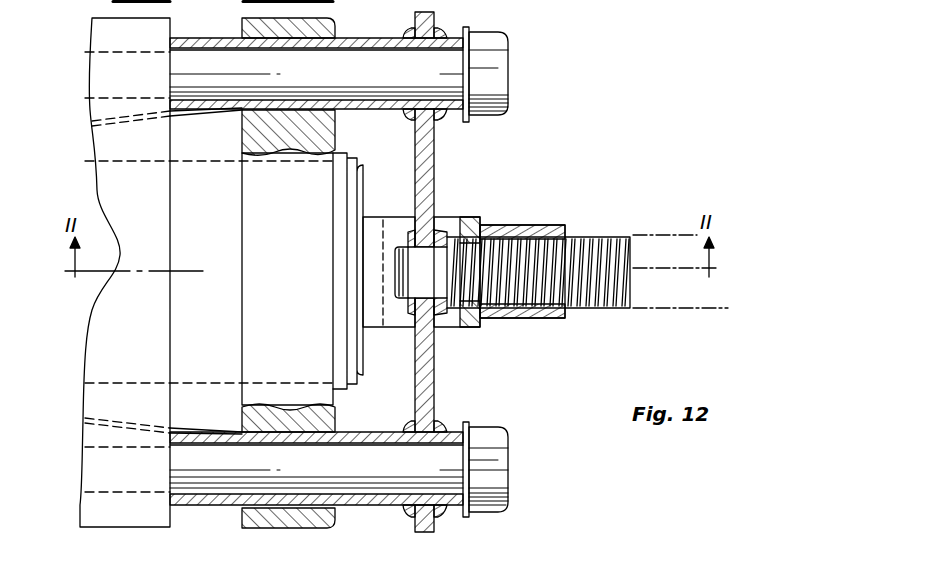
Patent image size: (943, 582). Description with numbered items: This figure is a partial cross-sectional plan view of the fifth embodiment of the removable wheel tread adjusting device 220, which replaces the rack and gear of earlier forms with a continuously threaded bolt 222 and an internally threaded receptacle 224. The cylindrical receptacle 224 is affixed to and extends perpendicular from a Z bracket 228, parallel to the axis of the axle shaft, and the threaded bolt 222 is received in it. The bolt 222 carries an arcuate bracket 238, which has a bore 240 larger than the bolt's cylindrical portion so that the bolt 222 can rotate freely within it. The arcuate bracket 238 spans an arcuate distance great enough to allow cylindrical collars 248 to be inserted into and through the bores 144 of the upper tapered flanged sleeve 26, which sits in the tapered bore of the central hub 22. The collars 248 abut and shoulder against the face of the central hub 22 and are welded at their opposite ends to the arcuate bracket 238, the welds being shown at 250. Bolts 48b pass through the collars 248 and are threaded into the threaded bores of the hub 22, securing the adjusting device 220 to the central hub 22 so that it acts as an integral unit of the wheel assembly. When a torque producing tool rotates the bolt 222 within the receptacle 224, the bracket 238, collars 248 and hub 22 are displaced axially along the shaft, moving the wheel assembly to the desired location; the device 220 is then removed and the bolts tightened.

The central hub 22 is at (137, 340).
The upper tapered flanged sleeve 26 is at (297, 266).
The bores of sleeve 144 is at (306, 90).
The cylindrical collars 248 is at (192, 112).
The weld 250 is at (404, 30).
The bolt 48b is at (508, 70).
The arcuate bracket 238 is at (435, 172).
The bore 240 is at (424, 248).
The internally threaded receptacle 224 is at (556, 225).
The threaded bolt 222 is at (611, 231).
The Z bracket 228 is at (479, 328).
The adjusting device 220 is at (582, 164).